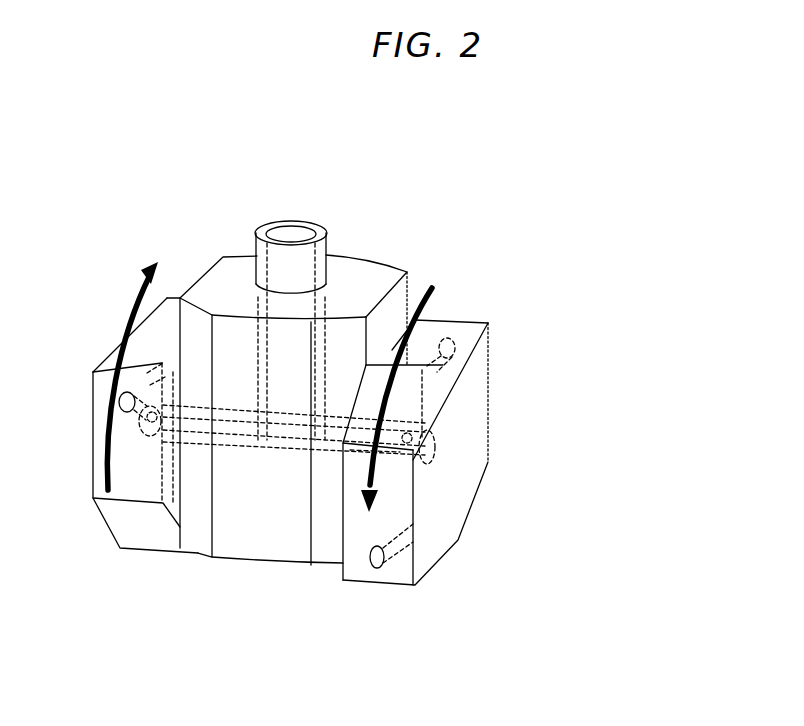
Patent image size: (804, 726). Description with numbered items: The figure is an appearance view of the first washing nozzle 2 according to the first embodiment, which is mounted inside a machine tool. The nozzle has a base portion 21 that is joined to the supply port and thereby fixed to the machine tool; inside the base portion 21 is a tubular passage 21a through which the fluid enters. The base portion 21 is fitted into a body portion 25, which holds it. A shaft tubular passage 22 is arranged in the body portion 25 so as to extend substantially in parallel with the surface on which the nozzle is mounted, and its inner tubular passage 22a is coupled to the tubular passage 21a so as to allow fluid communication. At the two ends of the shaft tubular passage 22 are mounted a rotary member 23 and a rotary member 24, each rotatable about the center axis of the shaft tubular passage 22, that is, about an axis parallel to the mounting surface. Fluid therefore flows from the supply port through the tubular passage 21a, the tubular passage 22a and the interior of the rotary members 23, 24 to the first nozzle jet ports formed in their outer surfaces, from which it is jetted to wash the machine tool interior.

The first washing nozzle 2 is at (490, 242).
The base portion 21 is at (323, 236).
The tubular passage 21a is at (283, 228).
The shaft tubular passage 22 is at (248, 445).
The tubular passage 22a is at (200, 425).
The rotary member 23 is at (460, 332).
The rotary member 24 is at (140, 342).
The body portion 25 is at (383, 268).